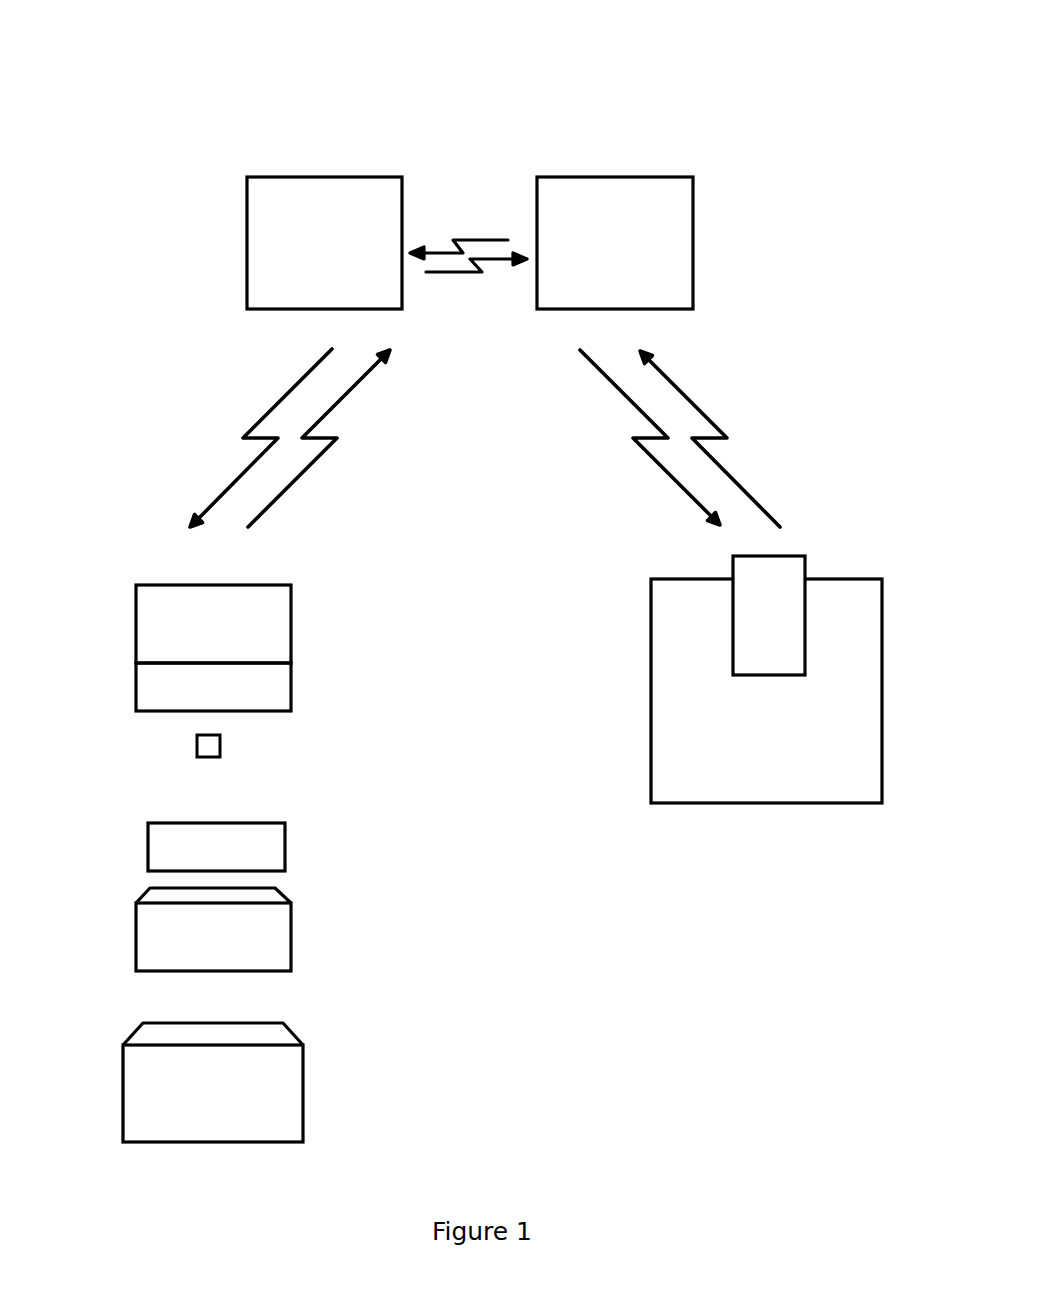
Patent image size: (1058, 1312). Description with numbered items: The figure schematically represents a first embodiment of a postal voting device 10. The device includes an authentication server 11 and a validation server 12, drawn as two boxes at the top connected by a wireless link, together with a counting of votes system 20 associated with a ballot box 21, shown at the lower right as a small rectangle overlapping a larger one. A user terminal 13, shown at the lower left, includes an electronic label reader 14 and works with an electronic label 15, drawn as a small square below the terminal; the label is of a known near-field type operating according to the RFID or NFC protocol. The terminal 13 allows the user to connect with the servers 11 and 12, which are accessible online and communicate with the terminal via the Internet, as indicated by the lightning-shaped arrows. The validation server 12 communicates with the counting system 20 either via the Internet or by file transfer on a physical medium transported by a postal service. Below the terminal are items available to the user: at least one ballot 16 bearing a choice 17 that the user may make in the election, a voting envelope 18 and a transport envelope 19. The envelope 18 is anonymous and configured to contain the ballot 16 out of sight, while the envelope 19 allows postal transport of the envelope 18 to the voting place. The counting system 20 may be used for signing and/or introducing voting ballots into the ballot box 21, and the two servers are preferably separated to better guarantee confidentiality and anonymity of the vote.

The postal voting device 10 is at (290, 78).
The authentication server 11 is at (267, 202).
The validation server 12 is at (675, 232).
The user terminal 13 is at (154, 627).
The electronic label reader 14 is at (148, 680).
The electronic label 15 is at (208, 742).
The ballot 16 is at (160, 852).
The choice 17 is at (275, 845).
The voting envelope 18 is at (155, 949).
The transport envelope 19 is at (137, 1085).
The counting of votes system 20 is at (793, 568).
The ballot box 21 is at (870, 668).